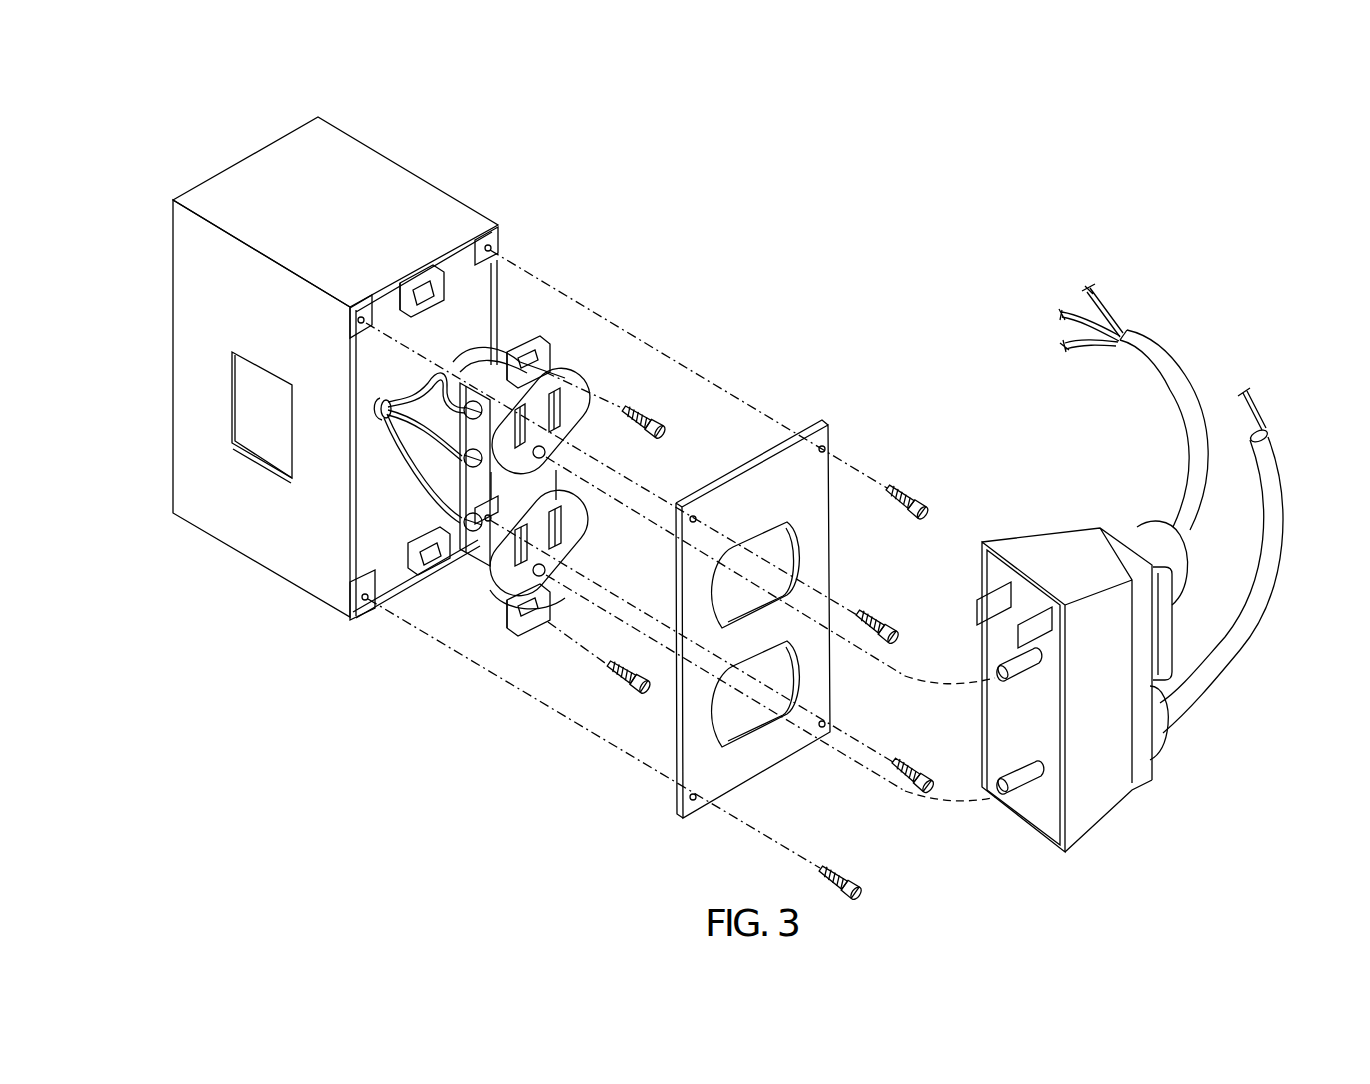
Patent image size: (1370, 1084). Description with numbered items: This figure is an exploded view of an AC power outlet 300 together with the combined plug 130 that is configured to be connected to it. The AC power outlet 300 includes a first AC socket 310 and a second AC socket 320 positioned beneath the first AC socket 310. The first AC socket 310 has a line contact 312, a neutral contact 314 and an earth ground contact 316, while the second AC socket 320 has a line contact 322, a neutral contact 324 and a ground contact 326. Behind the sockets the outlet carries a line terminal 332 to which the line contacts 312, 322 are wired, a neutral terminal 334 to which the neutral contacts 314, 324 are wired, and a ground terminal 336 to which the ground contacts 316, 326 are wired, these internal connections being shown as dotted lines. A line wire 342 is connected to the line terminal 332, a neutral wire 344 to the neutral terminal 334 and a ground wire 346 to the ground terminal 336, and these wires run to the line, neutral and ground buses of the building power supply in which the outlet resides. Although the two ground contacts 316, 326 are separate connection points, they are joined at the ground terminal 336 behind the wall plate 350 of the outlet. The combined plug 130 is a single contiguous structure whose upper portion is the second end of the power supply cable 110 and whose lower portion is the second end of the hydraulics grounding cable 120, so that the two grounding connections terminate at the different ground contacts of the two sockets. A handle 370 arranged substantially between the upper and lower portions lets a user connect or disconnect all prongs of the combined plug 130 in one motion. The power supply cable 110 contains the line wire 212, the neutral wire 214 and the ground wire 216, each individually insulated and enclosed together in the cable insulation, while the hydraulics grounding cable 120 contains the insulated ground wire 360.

The power supply cable 110 is at (1156, 360).
The hydraulics grounding cable 120 is at (1278, 592).
The combined plug 130 is at (1032, 496).
The line wire 212 is at (1107, 302).
The neutral wire 214 is at (1060, 305).
The ground wire 216 is at (1068, 350).
The AC power outlet 300 is at (254, 100).
The first AC socket 310 is at (568, 366).
The line contact 312 is at (570, 380).
The neutral contact 314 is at (525, 374).
The ground contact 316 is at (546, 448).
The second AC socket 320 is at (484, 580).
The line contact 322 is at (564, 540).
The neutral contact 324 is at (510, 582).
The ground contact 326 is at (541, 576).
The line terminal 332 is at (468, 538).
The neutral terminal 334 is at (465, 521).
The ground terminal 336 is at (462, 434).
The line wire 342 is at (468, 522).
The neutral wire 344 is at (460, 445).
The ground wire 346 is at (385, 412).
The wall plate 350 is at (760, 778).
The ground wire 360 is at (1255, 400).
The handle 370 is at (1170, 630).